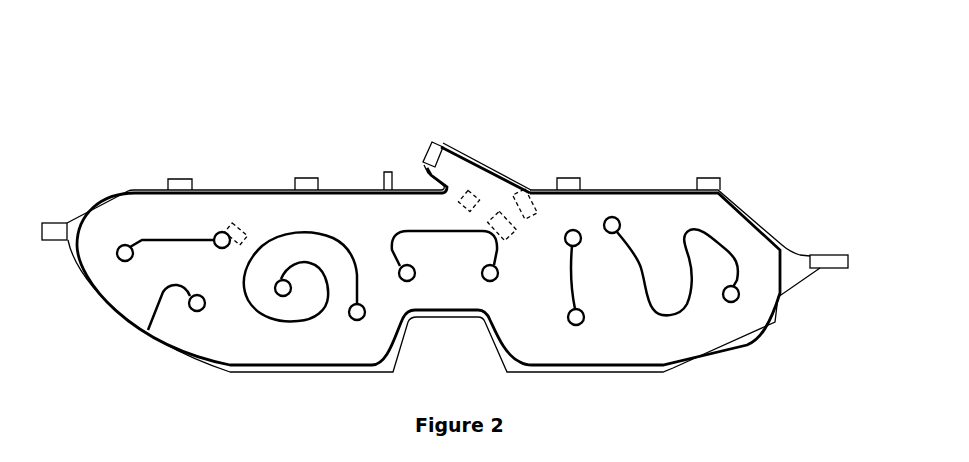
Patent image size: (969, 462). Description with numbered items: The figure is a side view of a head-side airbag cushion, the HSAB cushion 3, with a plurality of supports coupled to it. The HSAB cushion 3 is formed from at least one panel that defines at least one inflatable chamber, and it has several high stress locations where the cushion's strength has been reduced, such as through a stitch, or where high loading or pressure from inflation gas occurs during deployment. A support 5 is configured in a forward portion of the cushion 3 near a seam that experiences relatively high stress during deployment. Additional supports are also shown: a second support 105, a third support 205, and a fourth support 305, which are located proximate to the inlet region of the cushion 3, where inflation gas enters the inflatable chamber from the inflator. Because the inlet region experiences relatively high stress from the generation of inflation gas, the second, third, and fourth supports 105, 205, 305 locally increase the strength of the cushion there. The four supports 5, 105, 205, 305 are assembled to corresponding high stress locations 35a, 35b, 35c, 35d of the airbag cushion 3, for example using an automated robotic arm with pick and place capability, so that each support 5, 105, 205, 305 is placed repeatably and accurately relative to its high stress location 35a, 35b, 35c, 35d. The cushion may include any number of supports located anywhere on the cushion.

The HSAB cushion 3 is at (224, 78).
The support 5 is at (228, 222).
The high stress location 35a is at (235, 224).
The high stress location 35b is at (476, 190).
The high stress location 35c is at (499, 214).
The high stress location 35d is at (533, 200).
The second support 105 is at (467, 187).
The third support 205 is at (512, 237).
The fourth support 305 is at (530, 212).